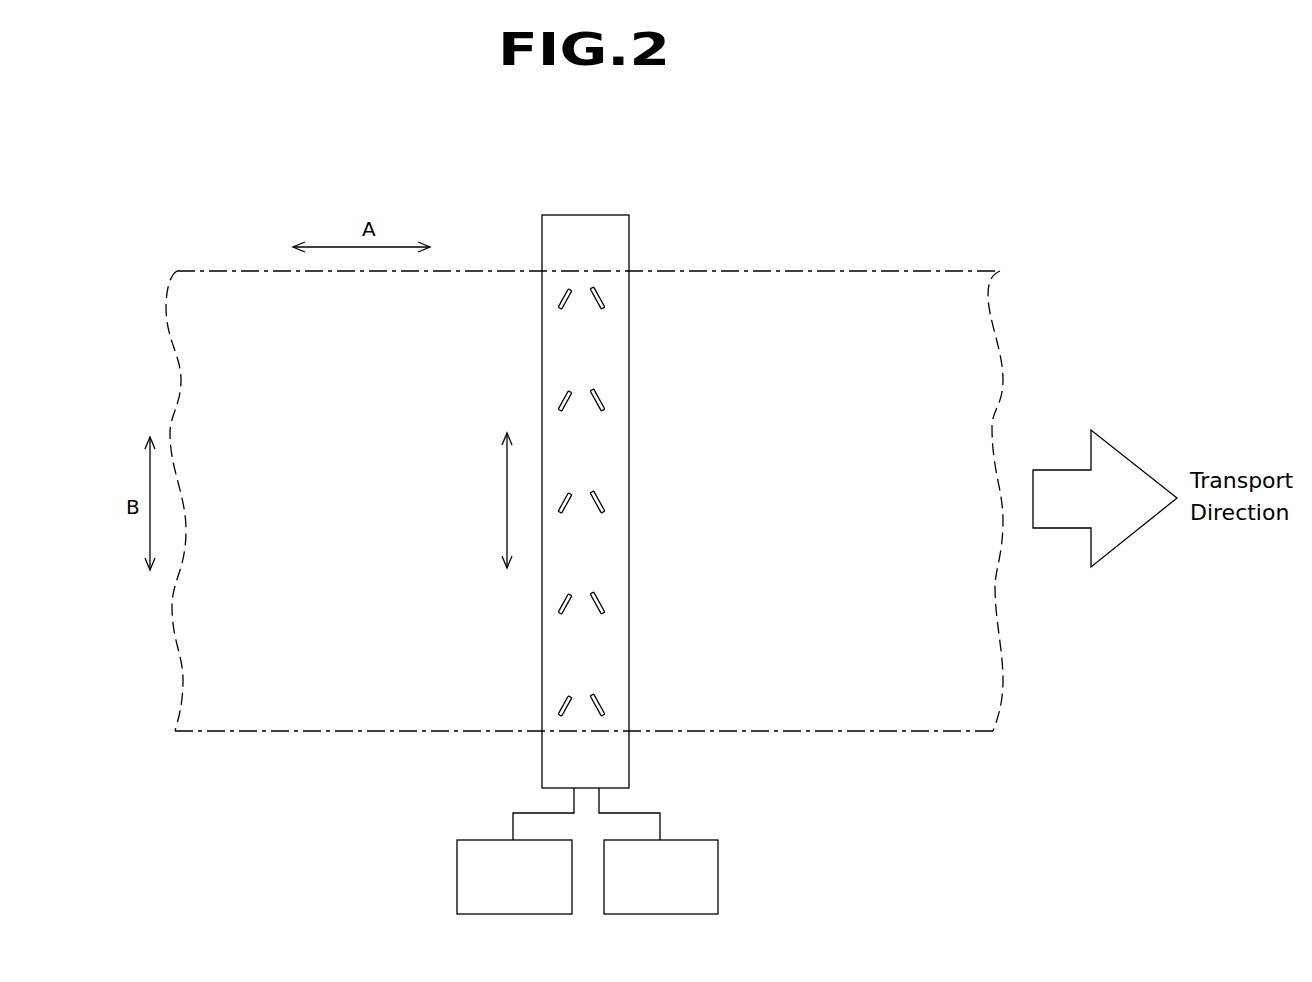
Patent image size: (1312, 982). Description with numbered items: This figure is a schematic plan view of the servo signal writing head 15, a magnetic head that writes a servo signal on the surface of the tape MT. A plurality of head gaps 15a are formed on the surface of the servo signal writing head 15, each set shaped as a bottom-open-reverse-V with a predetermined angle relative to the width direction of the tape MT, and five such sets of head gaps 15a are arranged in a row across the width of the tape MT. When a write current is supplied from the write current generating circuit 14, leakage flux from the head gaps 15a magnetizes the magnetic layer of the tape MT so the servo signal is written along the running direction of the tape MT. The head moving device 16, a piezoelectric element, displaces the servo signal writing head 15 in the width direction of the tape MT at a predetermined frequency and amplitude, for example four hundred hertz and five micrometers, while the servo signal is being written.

The write current generating circuit 14 is at (457, 876).
The servo signal writing head 15 is at (630, 762).
The head gaps 15a is at (602, 708).
The head moving device 16 is at (718, 873).
The tape MT is at (937, 268).